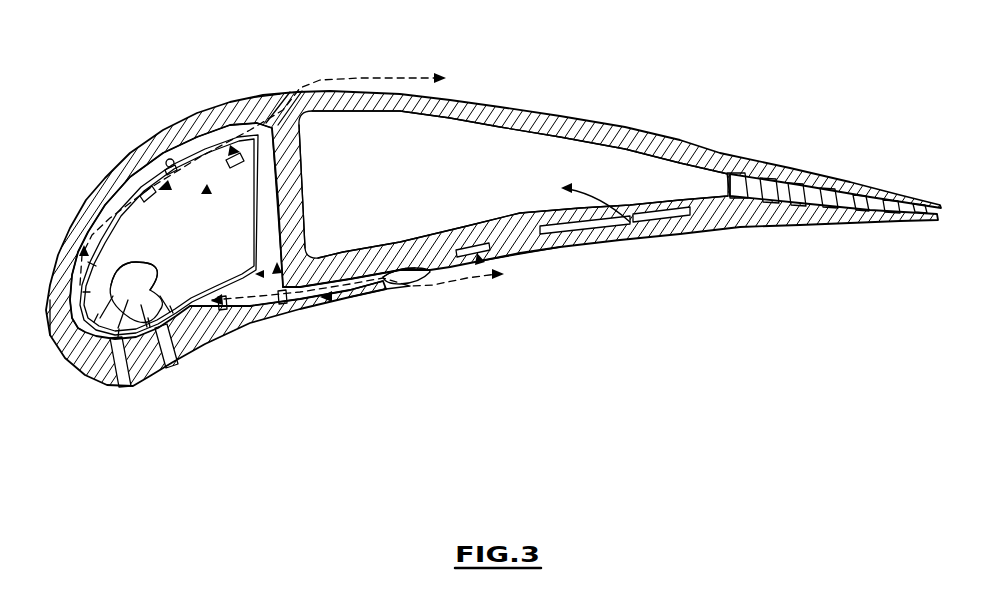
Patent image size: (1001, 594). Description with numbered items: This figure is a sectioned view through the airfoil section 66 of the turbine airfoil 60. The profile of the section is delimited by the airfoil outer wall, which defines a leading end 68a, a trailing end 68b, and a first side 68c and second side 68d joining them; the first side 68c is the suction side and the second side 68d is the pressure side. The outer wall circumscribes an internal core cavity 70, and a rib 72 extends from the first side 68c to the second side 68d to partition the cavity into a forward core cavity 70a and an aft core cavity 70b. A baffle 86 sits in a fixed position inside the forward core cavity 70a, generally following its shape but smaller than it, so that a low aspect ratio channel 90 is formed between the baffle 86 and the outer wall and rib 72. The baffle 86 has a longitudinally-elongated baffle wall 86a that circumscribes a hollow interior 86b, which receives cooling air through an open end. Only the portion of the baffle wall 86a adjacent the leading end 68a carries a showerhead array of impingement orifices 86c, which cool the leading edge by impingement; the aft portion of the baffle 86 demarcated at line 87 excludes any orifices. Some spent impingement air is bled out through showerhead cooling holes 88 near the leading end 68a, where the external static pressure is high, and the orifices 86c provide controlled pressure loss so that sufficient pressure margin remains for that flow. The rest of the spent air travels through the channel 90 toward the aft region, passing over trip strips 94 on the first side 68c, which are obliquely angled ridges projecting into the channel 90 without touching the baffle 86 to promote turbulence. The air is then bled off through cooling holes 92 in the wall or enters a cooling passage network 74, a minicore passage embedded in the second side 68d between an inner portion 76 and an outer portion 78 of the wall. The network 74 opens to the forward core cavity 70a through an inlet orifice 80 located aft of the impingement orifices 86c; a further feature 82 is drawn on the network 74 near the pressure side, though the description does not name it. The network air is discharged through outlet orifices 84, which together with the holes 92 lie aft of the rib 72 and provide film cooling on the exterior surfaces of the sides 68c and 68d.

The turbine airfoil 60 is at (675, 296).
The airfoil section 66 is at (493, 100).
The leading end 68a is at (63, 357).
The trailing end 68b is at (923, 224).
The first side 68c is at (260, 93).
The second side 68d is at (528, 252).
The internal core cavity 70 is at (630, 231).
The forward core cavity 70a is at (285, 293).
The aft core cavity 70b is at (470, 185).
The rib 72 is at (305, 178).
The cooling passage network 74 is at (478, 265).
The inner portion 76 is at (283, 305).
The outer portion 78 is at (360, 296).
The inlet orifice 80 is at (222, 312).
The passage inlet 82 is at (383, 268).
The outlet orifice 84 is at (410, 284).
The baffle 86 is at (184, 165).
The baffle wall 86a is at (243, 178).
The hollow interior 86b is at (146, 242).
The impingement orifices 86c is at (177, 302).
The line 87 is at (186, 276).
The showerhead cooling holes 88 is at (70, 325).
The low aspect ratio channel 90 is at (103, 208).
The cooling holes 92 is at (300, 87).
The trip strips 94 is at (168, 160).